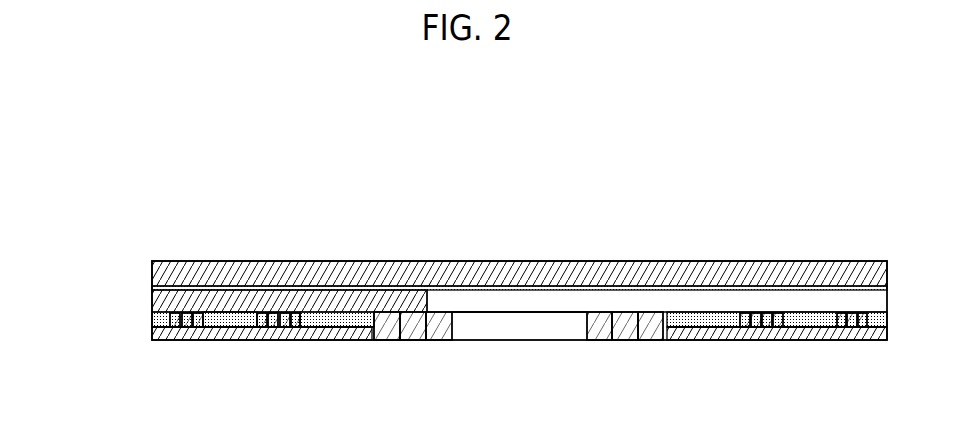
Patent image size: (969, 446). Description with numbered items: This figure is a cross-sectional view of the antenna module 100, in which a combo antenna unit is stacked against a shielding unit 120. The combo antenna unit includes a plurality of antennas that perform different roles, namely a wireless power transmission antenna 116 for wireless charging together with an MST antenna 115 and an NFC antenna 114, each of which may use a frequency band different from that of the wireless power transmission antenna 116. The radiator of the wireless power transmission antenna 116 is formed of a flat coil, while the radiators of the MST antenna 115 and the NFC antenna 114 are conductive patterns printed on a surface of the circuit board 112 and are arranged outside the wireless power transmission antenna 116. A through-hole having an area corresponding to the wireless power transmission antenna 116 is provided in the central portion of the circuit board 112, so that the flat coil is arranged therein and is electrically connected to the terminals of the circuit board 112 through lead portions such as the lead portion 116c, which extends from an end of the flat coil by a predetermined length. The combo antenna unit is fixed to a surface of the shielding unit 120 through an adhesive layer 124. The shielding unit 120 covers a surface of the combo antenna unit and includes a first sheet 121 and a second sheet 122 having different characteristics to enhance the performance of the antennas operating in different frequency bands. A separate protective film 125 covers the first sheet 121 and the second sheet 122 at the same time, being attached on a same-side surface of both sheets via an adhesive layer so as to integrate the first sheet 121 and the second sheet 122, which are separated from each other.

The antenna module 100 is at (535, 148).
The circuit board 112 is at (705, 340).
The NFC antenna 114 is at (184, 328).
The MST antenna 115 is at (268, 328).
The wireless power transmission antenna 116 is at (413, 330).
The lead portion 116c is at (512, 303).
The shielding unit 120 is at (73, 285).
The first sheet 121 is at (152, 274).
The second sheet 122 is at (152, 301).
The adhesive layer 124 is at (187, 313).
The protective film 125 is at (689, 261).